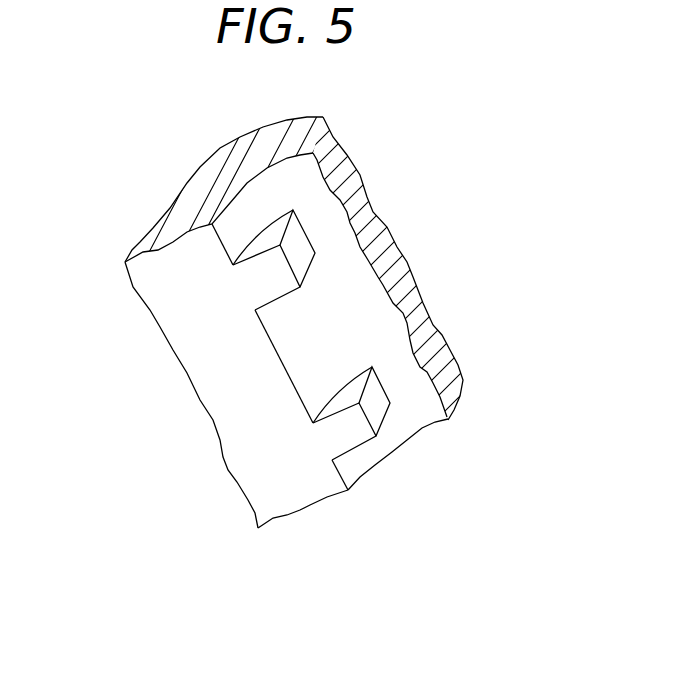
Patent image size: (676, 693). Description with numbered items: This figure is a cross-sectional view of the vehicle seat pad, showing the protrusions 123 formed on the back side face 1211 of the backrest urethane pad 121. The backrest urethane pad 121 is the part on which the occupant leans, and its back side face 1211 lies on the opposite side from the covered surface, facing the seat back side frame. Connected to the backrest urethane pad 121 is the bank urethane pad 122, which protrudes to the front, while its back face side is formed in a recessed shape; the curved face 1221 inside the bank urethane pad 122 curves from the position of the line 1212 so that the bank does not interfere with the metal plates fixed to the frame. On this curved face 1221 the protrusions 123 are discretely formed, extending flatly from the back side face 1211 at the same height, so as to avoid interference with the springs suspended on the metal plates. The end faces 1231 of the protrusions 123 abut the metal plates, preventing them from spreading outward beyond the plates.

The backrest urethane pad 121 is at (160, 222).
The bank urethane pad 122 is at (347, 158).
The protrusion 123 is at (262, 278).
The back side face 1211 is at (223, 392).
The line 1212 is at (270, 342).
The curved face 1221 is at (338, 303).
The end face 1231 is at (300, 243).